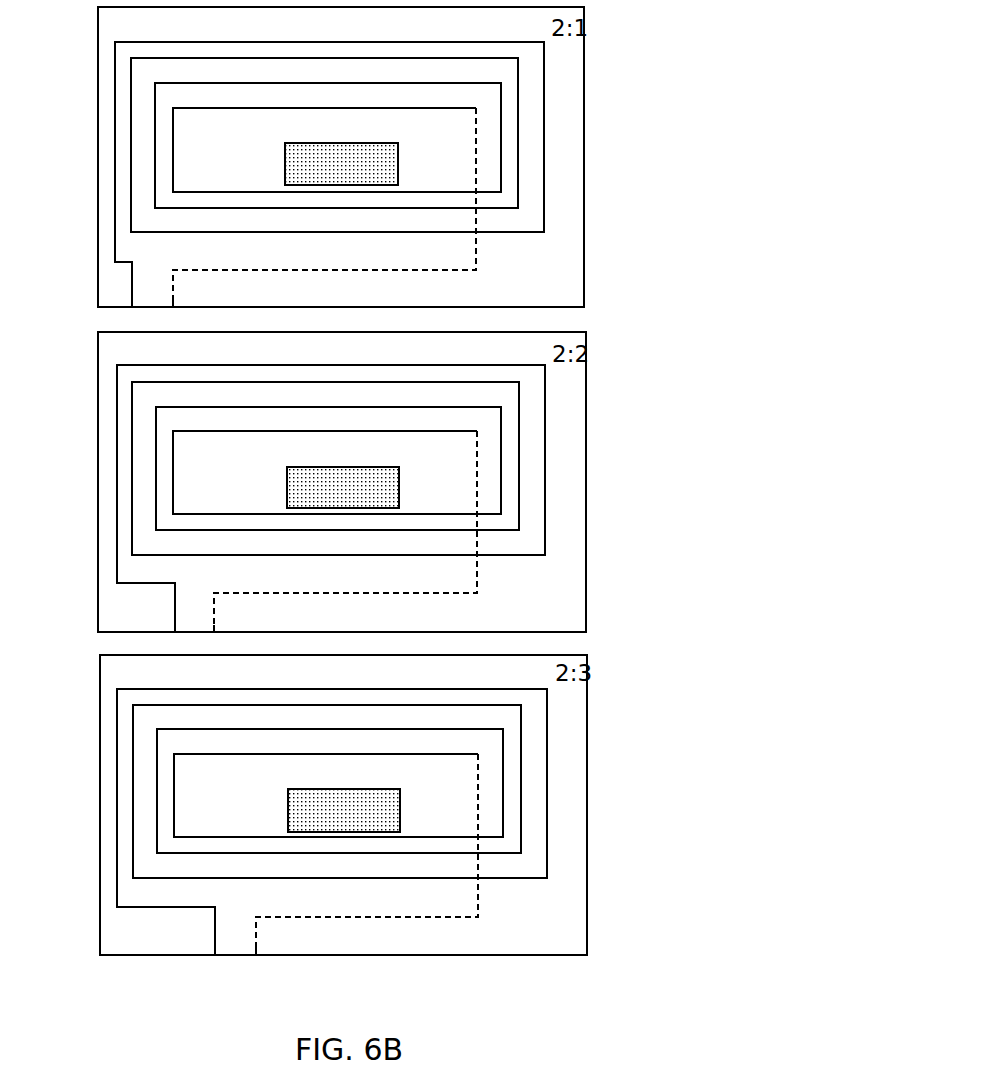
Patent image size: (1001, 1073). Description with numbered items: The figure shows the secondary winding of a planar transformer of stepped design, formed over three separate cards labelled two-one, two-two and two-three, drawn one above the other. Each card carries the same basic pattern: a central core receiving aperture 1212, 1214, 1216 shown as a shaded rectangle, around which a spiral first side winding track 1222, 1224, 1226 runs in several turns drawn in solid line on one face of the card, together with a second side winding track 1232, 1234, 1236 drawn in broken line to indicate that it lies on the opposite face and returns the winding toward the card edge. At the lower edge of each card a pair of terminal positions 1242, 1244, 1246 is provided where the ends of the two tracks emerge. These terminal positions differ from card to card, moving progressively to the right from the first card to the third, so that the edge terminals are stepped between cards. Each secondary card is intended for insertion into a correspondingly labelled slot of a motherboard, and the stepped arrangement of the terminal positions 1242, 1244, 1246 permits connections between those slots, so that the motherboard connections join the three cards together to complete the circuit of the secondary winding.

The core receiving aperture 1212 is at (400, 167).
The first side winding track 1222 is at (544, 205).
The second side winding track 1232 is at (476, 262).
The terminal position 1242 is at (173, 307).
The core receiving aperture 1214 is at (399, 490).
The first side winding track 1224 is at (545, 527).
The second side winding track 1234 is at (477, 585).
The terminal position 1244 is at (214, 632).
The core receiving aperture 1216 is at (400, 813).
The first side winding track 1226 is at (547, 850).
The second side winding track 1236 is at (478, 908).
The terminal position 1246 is at (256, 955).